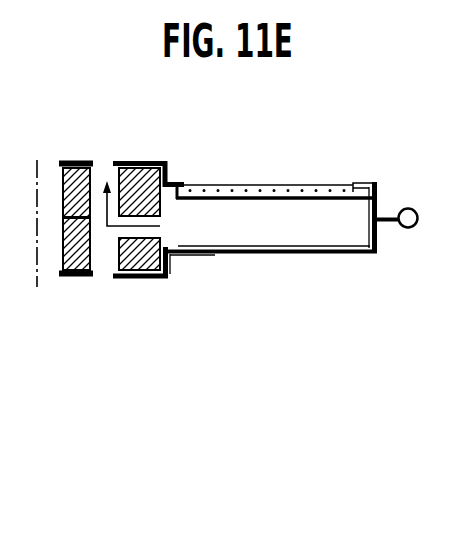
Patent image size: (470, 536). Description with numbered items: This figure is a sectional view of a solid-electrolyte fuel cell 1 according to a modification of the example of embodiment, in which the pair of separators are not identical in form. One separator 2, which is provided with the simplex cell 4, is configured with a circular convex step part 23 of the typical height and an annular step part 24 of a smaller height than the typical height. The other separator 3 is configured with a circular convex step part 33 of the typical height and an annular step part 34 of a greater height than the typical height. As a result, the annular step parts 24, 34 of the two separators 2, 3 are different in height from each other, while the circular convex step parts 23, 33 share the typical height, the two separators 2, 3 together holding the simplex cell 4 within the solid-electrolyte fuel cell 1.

The solid-electrolyte fuel cell 1 is at (388, 164).
The separator 2 is at (260, 178).
The separator 3 is at (268, 259).
The simplex cell 4 is at (332, 185).
The circular convex step part 23 is at (170, 167).
The annular step part 24 is at (379, 202).
The circular convex step part 33 is at (169, 271).
The annular step part 34 is at (378, 238).